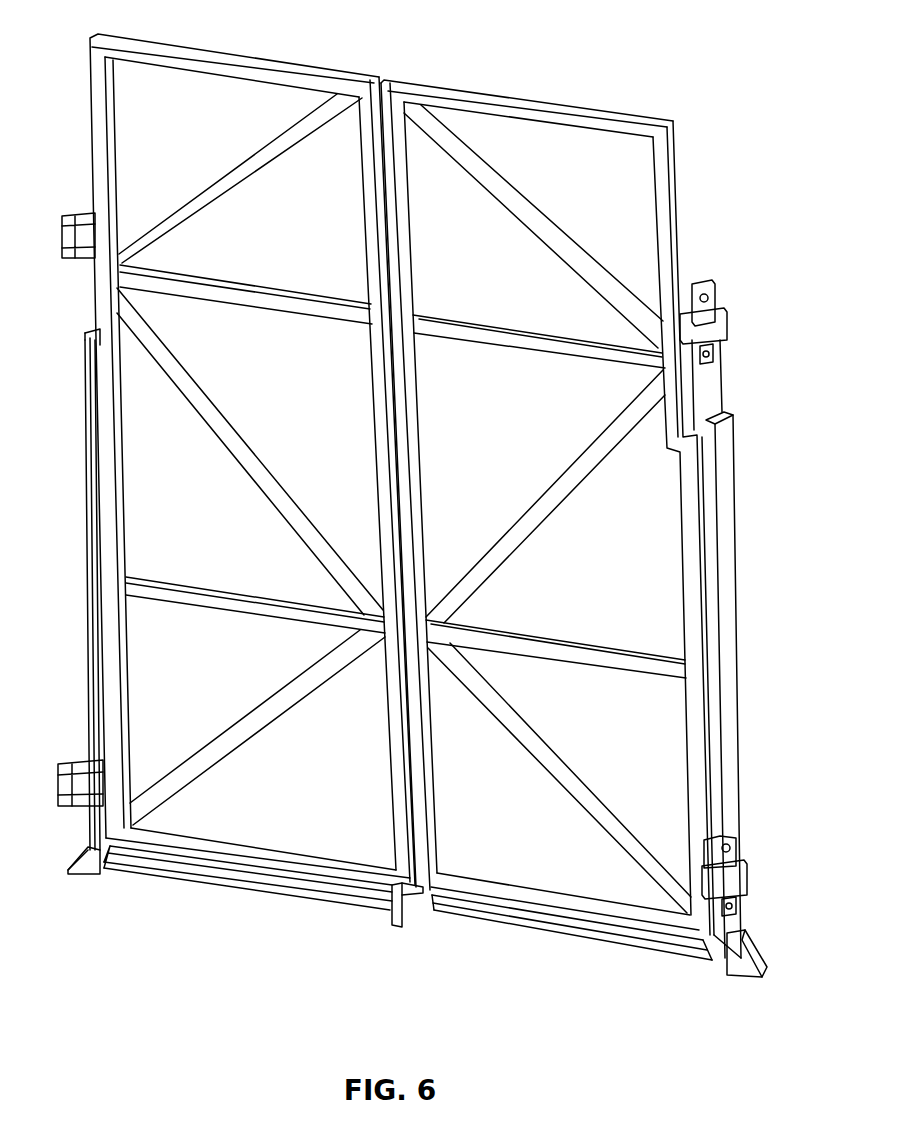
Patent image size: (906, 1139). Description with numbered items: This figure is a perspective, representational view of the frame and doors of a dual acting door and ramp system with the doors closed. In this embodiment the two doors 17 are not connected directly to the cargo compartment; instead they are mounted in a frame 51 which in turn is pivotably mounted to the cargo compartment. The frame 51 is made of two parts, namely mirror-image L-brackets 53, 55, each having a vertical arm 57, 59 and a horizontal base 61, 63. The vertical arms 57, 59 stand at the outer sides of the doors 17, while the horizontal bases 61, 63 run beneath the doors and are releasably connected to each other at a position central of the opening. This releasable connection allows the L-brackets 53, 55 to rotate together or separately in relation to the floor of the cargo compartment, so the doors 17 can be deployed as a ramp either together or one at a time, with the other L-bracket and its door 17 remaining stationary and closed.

The door 17 is at (276, 60).
The frame 51 is at (140, 910).
The L-bracket 53 is at (738, 562).
The L-bracket 55 is at (84, 546).
The vertical arm 57 is at (720, 373).
The vertical arm 59 is at (78, 291).
The horizontal base 61 is at (557, 942).
The horizontal base 63 is at (268, 898).